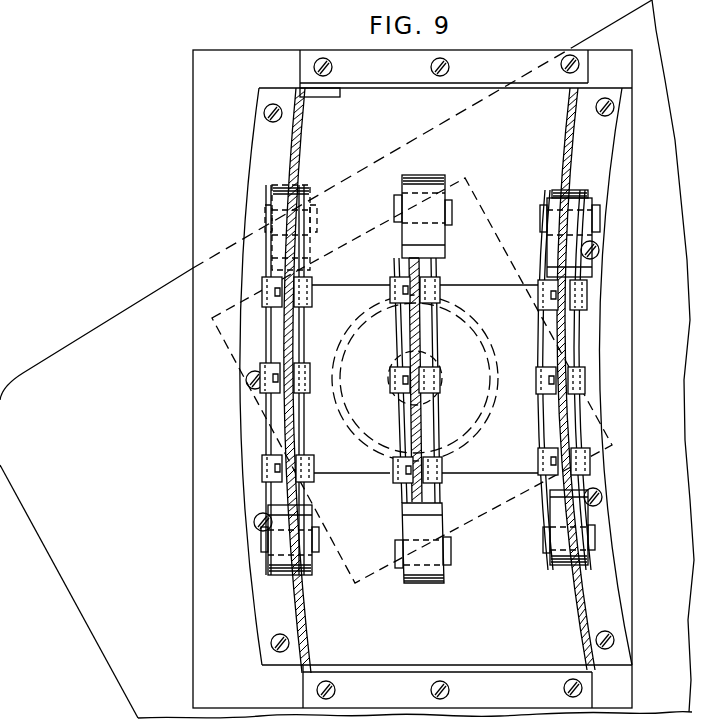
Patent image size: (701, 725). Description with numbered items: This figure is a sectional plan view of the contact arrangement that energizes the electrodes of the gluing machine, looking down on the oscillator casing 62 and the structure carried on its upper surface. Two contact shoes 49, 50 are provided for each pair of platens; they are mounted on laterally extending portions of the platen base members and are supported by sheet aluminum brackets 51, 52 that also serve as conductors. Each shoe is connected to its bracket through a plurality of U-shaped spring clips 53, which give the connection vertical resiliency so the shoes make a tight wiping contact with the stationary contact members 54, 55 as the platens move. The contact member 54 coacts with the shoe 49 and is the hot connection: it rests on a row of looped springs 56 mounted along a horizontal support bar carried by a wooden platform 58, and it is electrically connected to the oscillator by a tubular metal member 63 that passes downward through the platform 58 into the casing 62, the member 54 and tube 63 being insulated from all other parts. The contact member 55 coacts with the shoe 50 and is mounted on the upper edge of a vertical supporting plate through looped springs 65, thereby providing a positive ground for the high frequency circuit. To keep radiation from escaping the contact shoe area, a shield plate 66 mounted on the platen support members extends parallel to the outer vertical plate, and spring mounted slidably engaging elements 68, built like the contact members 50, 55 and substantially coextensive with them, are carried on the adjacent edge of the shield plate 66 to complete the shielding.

The contact shoe 49 is at (418, 343).
The contact shoe 50 is at (573, 328).
The bracket 51 is at (420, 418).
The bracket 52 is at (562, 350).
The U-shaped spring clip 53 is at (441, 283).
The stationary contact member 54 is at (435, 243).
The stationary contact member 55 is at (578, 193).
The looped spring 56 is at (450, 205).
The wooden platform 58 is at (502, 460).
The oscillator casing 62 is at (95, 617).
The tubular metal member 63 is at (442, 375).
The looped spring 65 is at (590, 220).
The shield plate 66 is at (281, 259).
The spring mounted slidably engaging element 68 is at (275, 333).